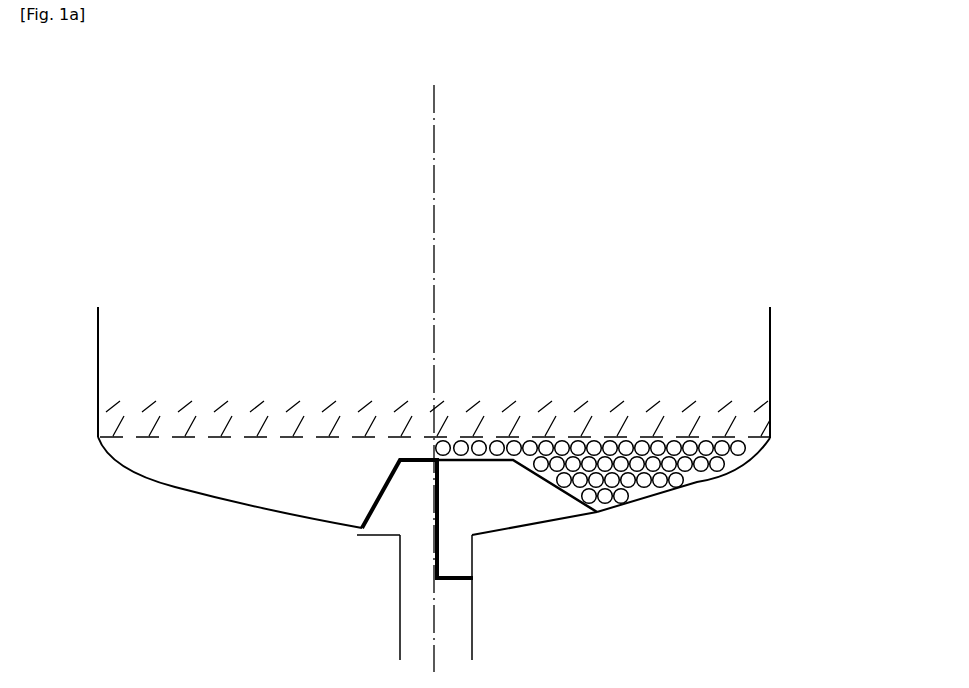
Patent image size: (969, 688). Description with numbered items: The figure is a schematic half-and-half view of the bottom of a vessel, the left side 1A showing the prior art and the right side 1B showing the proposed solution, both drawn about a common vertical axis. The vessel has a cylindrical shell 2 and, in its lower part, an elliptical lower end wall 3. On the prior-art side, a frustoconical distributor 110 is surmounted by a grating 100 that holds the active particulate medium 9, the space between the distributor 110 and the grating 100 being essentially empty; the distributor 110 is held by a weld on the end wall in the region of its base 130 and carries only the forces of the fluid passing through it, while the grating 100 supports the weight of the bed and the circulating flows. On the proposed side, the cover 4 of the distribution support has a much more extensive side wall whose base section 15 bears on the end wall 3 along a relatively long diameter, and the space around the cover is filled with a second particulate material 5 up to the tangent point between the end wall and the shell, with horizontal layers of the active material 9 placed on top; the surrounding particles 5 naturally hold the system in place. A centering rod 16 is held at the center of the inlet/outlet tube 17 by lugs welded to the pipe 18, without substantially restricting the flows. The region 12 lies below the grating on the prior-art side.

The prior art side 1A is at (247, 137).
The current invention side 1B is at (662, 132).
The cylindrical shell 2 is at (98, 338).
The lower end wall 3 is at (177, 487).
The cover of the distribution support 4 is at (553, 492).
The second particulate material 5 is at (690, 488).
The active particulate medium 9 is at (380, 337).
The liquid 12 is at (286, 467).
The base section 15 is at (597, 512).
The rod 16 is at (443, 527).
The inlet/outlet tube 17 is at (398, 634).
The pipe 18 is at (452, 582).
The grating 100 is at (190, 437).
The frustoconical distributor 110 is at (379, 497).
The base of the distributor 130 is at (362, 529).